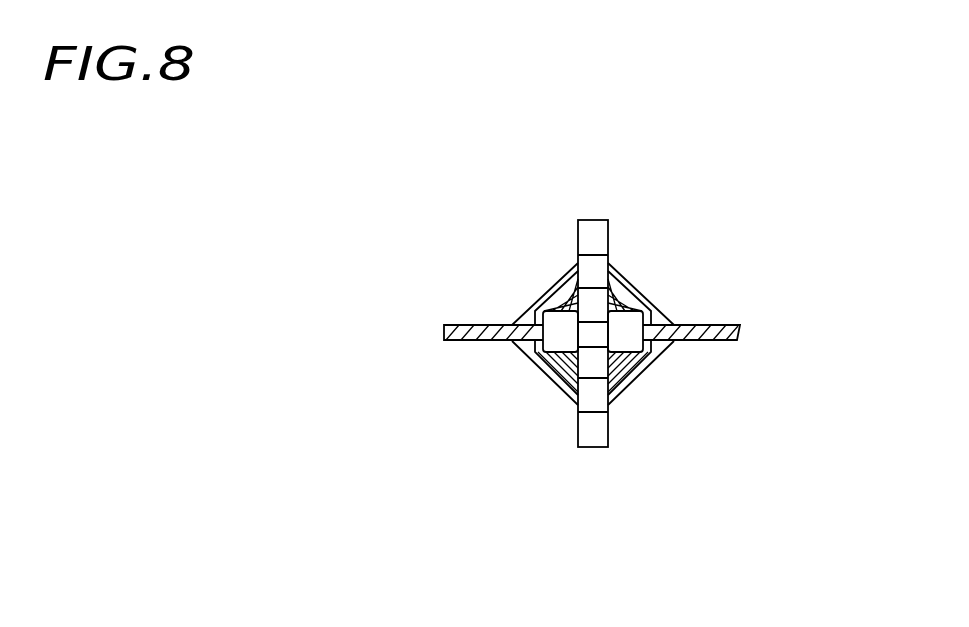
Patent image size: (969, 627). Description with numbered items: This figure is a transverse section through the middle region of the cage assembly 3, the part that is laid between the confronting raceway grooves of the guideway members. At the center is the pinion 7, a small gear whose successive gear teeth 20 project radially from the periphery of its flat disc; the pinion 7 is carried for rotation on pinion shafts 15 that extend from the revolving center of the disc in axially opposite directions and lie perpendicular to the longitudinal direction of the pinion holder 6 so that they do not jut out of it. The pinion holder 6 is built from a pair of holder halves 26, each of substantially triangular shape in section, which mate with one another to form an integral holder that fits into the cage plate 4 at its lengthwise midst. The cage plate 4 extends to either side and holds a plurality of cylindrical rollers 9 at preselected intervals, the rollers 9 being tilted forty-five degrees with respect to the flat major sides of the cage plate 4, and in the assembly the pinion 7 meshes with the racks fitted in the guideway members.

The cage assembly 3 is at (553, 258).
The cage plate 4 is at (446, 337).
The pinion holder 6 is at (555, 300).
The pinion 7 is at (603, 230).
The cylindrical rollers 9 is at (540, 367).
The pinion shafts 15 is at (630, 328).
The gear teeth 20 is at (590, 235).
The holder halves 26 is at (632, 287).